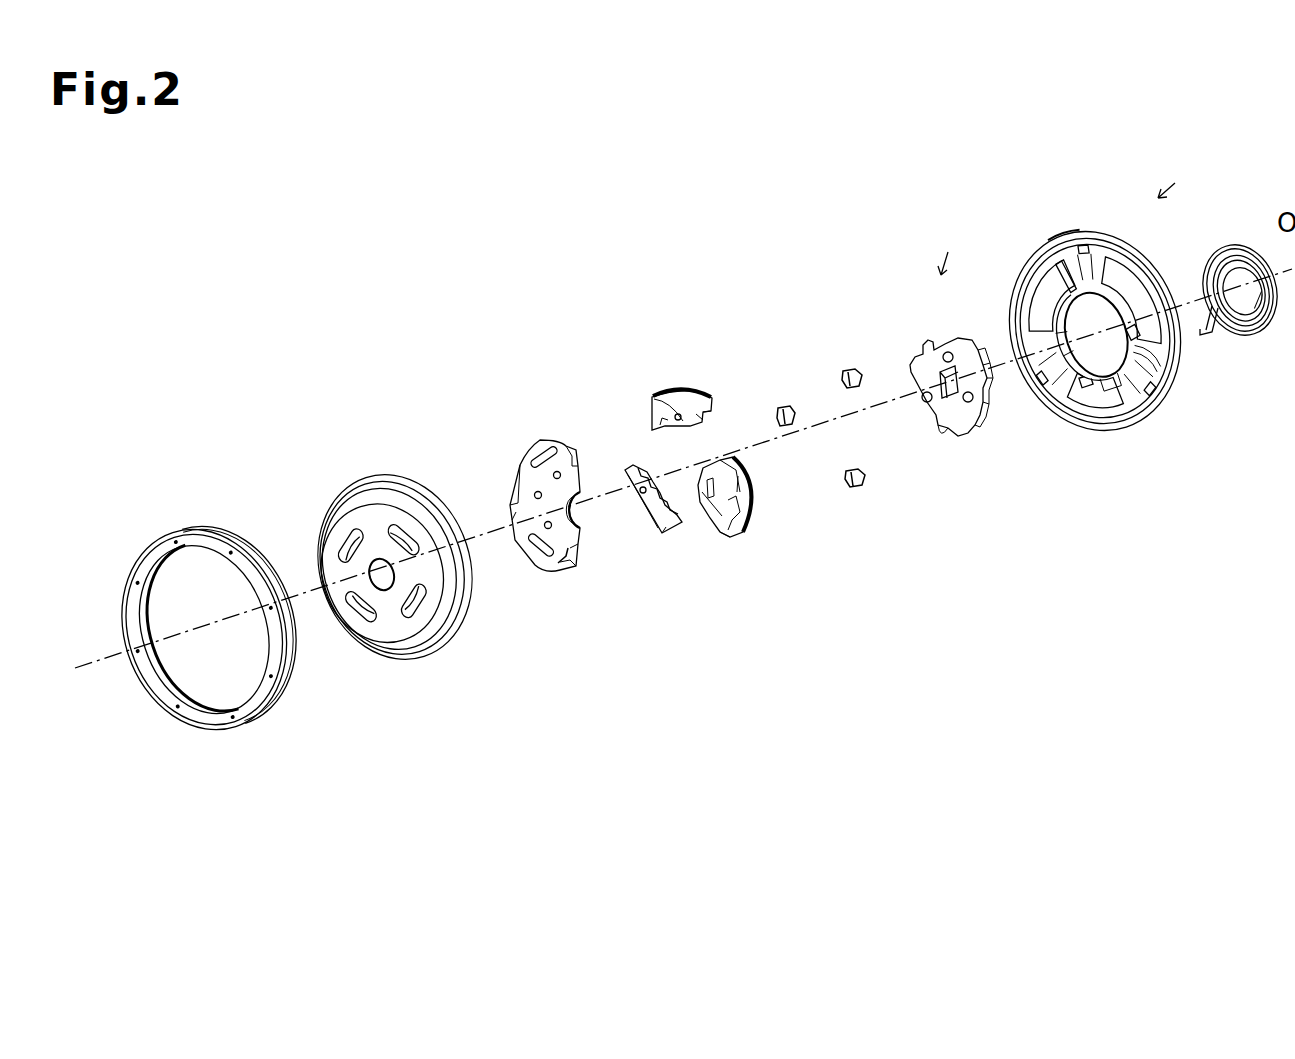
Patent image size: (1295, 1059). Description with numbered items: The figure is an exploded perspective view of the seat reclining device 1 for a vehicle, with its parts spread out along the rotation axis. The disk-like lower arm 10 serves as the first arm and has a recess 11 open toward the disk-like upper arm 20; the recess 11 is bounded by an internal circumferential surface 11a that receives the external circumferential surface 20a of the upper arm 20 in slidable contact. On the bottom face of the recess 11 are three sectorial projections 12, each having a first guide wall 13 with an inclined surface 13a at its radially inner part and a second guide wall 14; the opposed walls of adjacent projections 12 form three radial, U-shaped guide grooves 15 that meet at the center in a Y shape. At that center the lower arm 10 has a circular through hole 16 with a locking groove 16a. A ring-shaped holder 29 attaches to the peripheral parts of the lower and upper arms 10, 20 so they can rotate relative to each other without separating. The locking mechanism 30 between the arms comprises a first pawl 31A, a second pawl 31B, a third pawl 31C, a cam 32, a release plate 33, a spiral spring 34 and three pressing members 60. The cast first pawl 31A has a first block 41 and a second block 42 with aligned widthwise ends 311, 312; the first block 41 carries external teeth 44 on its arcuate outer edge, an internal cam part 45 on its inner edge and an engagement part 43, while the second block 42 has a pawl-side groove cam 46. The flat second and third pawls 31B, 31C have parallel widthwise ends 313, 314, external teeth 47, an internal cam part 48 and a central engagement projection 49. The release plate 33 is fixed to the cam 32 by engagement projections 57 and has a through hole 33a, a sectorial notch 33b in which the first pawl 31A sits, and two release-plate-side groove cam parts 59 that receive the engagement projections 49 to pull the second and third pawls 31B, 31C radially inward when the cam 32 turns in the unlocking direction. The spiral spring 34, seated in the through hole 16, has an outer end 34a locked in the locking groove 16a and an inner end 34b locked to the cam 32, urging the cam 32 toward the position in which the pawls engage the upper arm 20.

The seat reclining device 1 is at (1175, 179).
The lower arm 10 is at (1040, 252).
The recess 11 is at (1116, 432).
The internal circumferential surface 11a is at (1076, 432).
The projections 12 is at (1140, 300).
The first guide wall 13 is at (1115, 262).
The inclined surface 13a is at (1126, 280).
The second guide wall 14 is at (1080, 268).
The guide grooves 15 is at (1104, 240).
The through hole 16 is at (1136, 366).
The locking groove 16a is at (1070, 415).
The upper arm 20 is at (395, 551).
The external circumferential surface 20a is at (378, 478).
The holder 29 is at (222, 535).
The locking mechanism 30 is at (949, 249).
The first pawl 31A is at (743, 506).
The second pawl 31B is at (679, 415).
The third pawl 31C is at (639, 507).
The widthwise end 311 is at (735, 538).
The widthwise end 312 is at (752, 466).
The widthwise end 313 is at (715, 405).
The widthwise end 314 is at (650, 418).
The cam 32 is at (943, 394).
The release plate 33 is at (551, 502).
The through hole 33a is at (575, 498).
The notch 33b is at (574, 556).
The spiral spring 34 is at (1243, 297).
The outer end 34a is at (1216, 338).
The inner end 34b is at (1262, 318).
The first block 41 is at (760, 490).
The second block 42 is at (702, 520).
The engagement part 43 is at (746, 532).
The external teeth 44 is at (760, 510).
The internal cam part 45 is at (736, 460).
The pawl-side groove cam 46 is at (711, 478).
The external teeth 47 is at (672, 388).
The internal cam part 48 is at (652, 472).
The engagement projection 49 is at (662, 397).
The engagement projections 57 is at (944, 436).
The release-plate-side groove cam parts 59 is at (548, 448).
The pressing members 60 is at (851, 370).